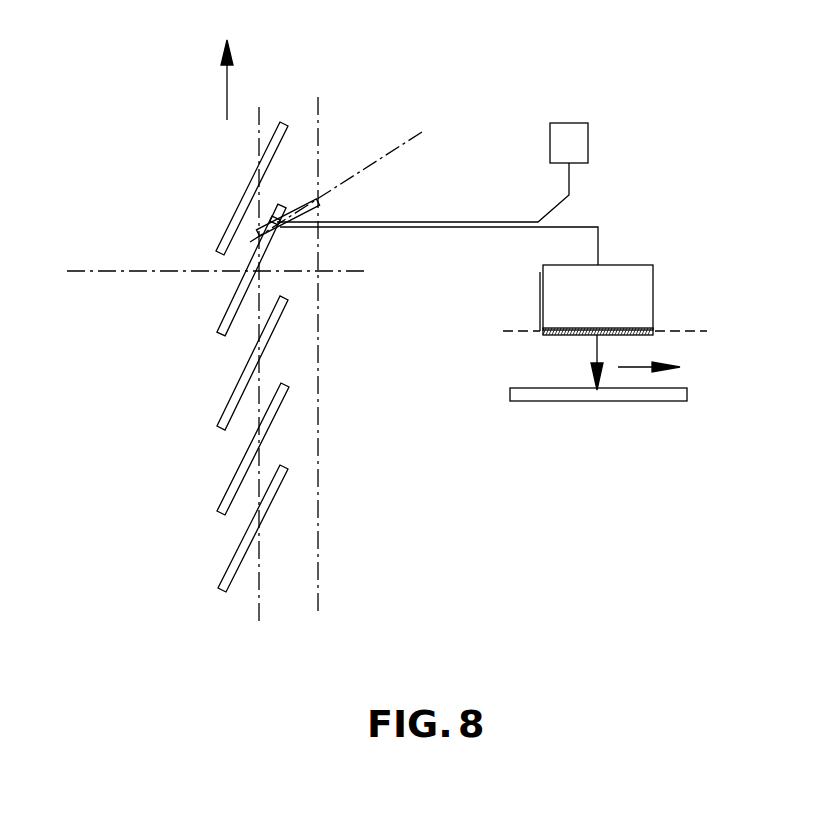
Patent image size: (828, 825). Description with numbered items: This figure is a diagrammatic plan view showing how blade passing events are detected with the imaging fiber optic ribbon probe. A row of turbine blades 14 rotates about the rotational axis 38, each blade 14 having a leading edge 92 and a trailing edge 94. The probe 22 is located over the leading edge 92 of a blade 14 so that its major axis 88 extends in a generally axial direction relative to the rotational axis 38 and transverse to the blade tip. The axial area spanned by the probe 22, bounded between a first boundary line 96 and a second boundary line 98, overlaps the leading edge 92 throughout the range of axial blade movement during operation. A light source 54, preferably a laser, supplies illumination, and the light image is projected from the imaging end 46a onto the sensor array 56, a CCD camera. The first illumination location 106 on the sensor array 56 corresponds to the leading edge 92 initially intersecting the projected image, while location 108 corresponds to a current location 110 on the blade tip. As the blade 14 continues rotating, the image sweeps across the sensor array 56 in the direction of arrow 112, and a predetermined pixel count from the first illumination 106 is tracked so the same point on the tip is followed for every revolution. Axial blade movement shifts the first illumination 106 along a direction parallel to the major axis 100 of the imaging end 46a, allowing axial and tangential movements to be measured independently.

The blade 14 is at (270, 155).
The probe 22 is at (318, 203).
The rotational axis 38 is at (90, 272).
The imaging end 46a is at (540, 339).
The light source 54 is at (588, 143).
The sensor array 56 is at (553, 401).
The major axis 88 is at (392, 150).
The leading edge 92 is at (285, 205).
The trailing edge 94 is at (221, 250).
The first boundary line 96 is at (318, 535).
The second boundary line 98 is at (259, 606).
The major axis of the imaging end 100 is at (688, 331).
The first illumination location 106 is at (593, 391).
The location on the sensor array 108 is at (597, 387).
The current location 110 is at (275, 223).
The arrow 112 is at (635, 367).